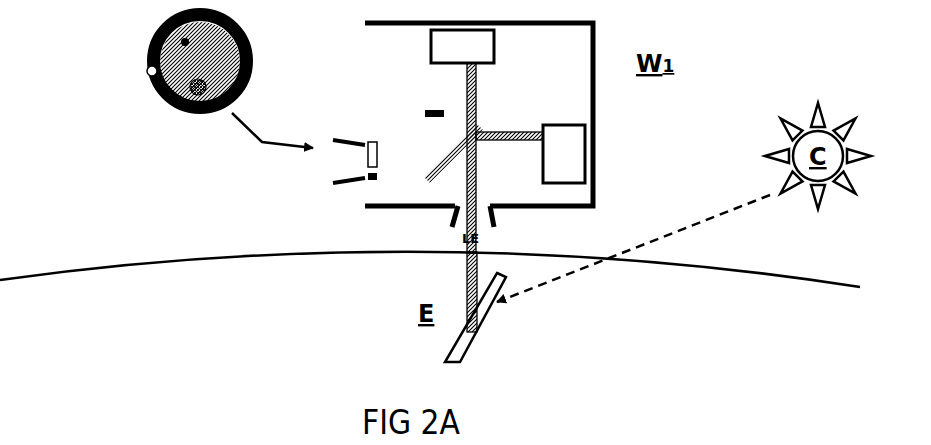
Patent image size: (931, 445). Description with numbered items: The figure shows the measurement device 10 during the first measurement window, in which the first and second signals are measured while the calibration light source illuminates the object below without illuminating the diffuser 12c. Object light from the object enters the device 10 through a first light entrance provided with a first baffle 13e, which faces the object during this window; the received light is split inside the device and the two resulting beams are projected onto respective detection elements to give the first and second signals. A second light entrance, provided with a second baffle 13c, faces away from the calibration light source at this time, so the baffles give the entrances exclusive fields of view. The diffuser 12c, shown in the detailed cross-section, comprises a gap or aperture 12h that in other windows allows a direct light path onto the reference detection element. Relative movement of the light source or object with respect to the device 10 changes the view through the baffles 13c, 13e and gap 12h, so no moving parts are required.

The measurement device 10 is at (463, 138).
The diffuser 12c is at (185, 42).
The second baffle 13c is at (148, 71).
The gap or aperture 12h is at (186, 87).
The first baffle 13e is at (504, 223).